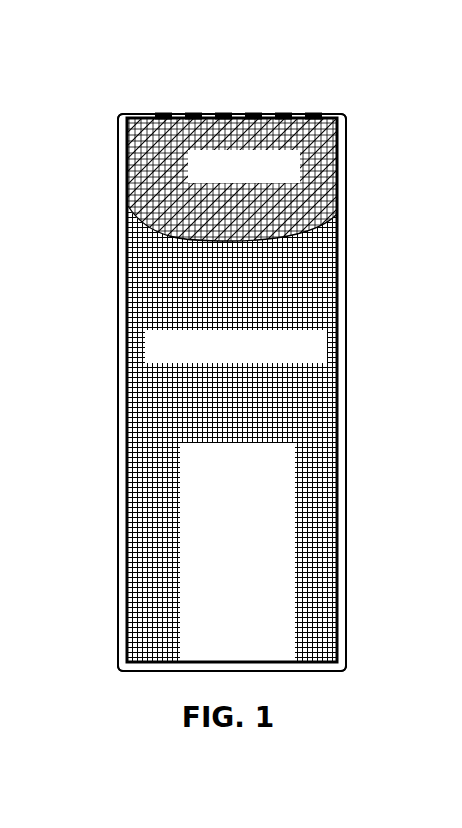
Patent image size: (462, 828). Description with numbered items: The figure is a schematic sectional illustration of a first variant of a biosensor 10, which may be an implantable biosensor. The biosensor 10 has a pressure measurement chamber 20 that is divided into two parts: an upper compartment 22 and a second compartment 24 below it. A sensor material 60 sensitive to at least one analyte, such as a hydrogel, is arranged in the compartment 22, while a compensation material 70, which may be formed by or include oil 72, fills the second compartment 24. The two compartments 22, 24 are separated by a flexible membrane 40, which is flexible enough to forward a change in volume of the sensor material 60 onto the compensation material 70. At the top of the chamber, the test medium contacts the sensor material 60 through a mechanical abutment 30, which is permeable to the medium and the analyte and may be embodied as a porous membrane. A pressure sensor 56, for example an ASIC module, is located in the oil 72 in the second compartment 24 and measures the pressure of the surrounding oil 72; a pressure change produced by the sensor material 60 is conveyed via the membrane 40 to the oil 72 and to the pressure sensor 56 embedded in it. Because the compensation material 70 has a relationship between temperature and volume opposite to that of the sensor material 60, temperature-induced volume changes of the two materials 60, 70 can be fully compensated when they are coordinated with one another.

The biosensor 10 is at (104, 87).
The pressure measurement chamber 20 is at (118, 243).
The compartment 22 is at (155, 192).
The second compartment 24 is at (152, 303).
The mechanical abutment 30 is at (196, 113).
The flexible membrane 40 is at (293, 230).
The pressure sensor 56 is at (295, 578).
The sensor material 60 is at (244, 170).
The compensation material 70 is at (236, 346).
The oil 72 is at (236, 346).